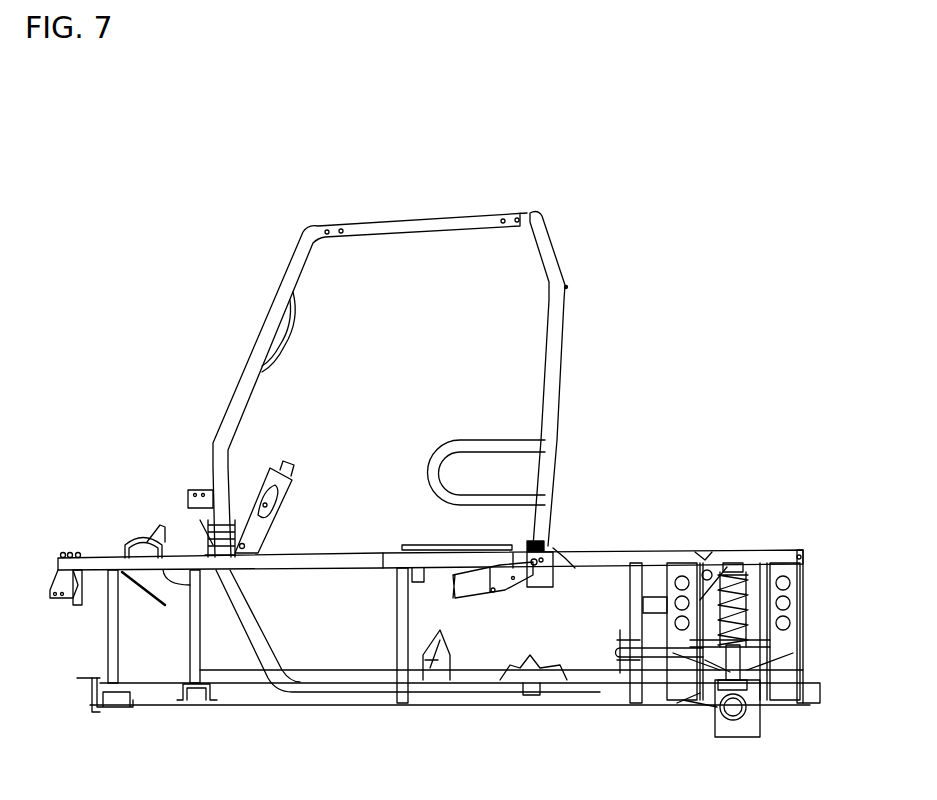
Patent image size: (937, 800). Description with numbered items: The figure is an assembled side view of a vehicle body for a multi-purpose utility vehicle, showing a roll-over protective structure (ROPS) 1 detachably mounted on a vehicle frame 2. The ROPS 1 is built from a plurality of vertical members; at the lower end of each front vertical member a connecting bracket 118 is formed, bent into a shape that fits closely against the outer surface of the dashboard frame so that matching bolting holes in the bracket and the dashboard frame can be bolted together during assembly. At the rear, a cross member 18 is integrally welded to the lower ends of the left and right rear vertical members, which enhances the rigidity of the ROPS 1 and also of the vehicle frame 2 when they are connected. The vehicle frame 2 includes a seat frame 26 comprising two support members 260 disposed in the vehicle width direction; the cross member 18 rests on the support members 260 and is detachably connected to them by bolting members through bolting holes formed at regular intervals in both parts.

The roll-over protective structure (ROPS) 1 is at (588, 231).
The vehicle frame 2 is at (749, 518).
The cross member 18 is at (543, 550).
The seat frame 26 is at (440, 540).
The connecting bracket 118 is at (213, 540).
The support member 260 is at (530, 583).